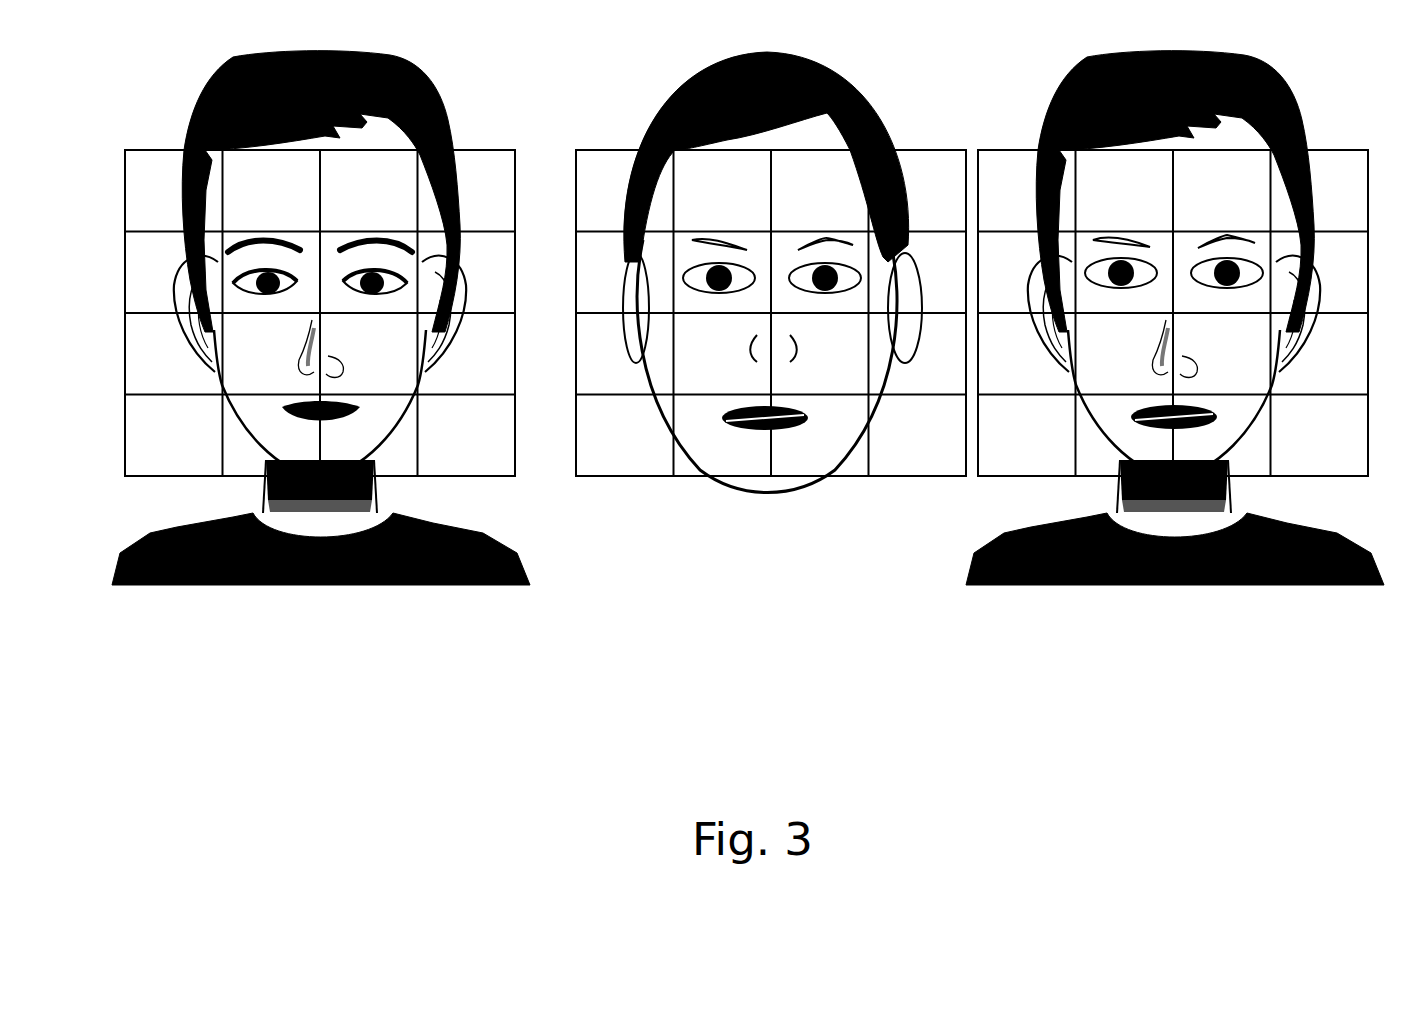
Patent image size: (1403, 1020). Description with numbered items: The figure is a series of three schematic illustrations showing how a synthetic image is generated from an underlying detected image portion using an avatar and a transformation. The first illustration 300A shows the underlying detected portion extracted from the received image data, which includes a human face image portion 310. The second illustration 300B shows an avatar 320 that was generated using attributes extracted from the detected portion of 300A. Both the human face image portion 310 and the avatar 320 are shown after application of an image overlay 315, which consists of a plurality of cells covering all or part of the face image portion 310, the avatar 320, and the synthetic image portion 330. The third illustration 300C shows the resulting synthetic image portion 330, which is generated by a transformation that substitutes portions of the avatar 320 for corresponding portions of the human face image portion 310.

The underlying detected portion 300A is at (336, 372).
The avatar illustration 300B is at (756, 363).
The synthetic image illustration 300C is at (1174, 379).
The human face image portion 310 is at (448, 122).
The image overlay 315 is at (248, 476).
The avatar 320 is at (760, 497).
The synthetic image portion 330 is at (1053, 117).